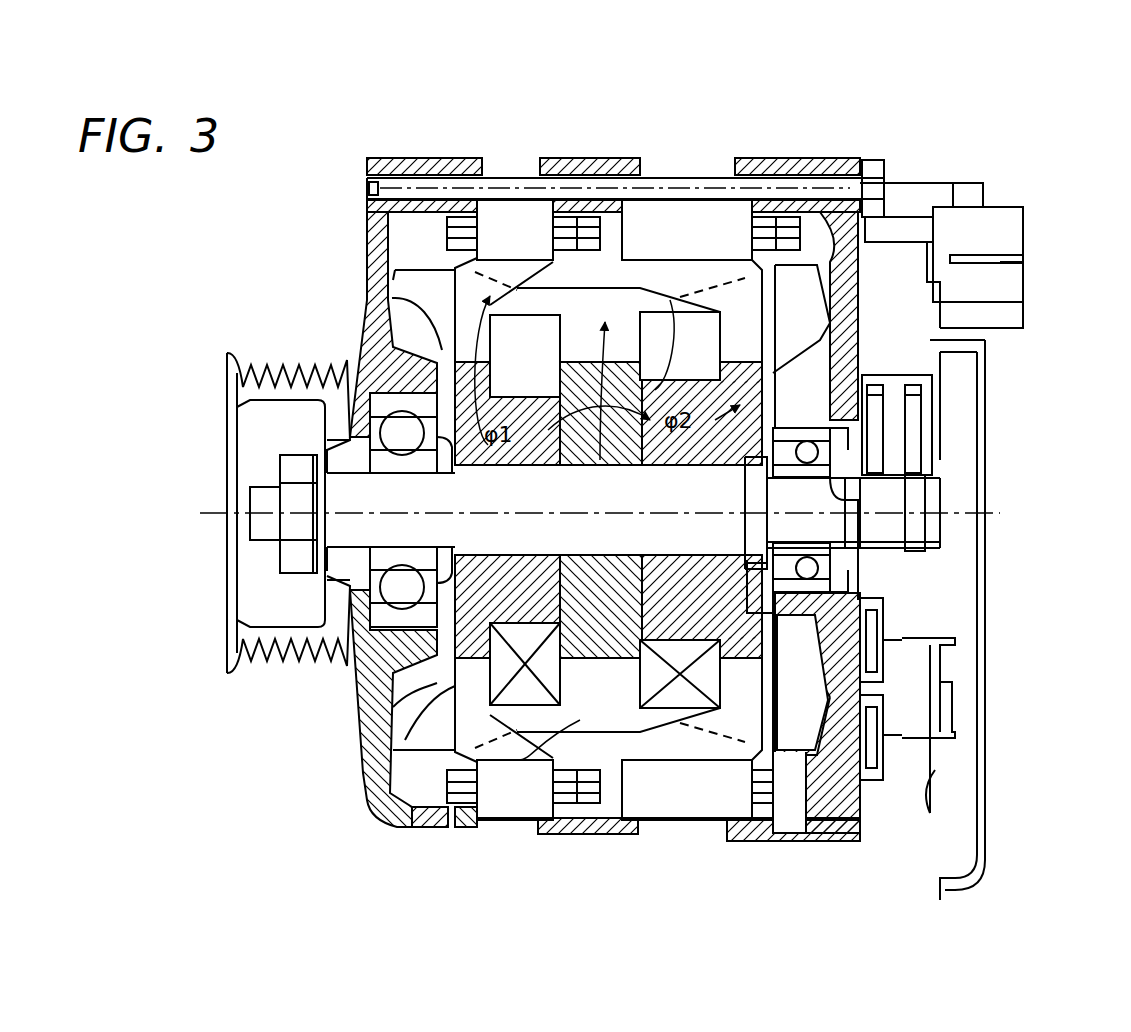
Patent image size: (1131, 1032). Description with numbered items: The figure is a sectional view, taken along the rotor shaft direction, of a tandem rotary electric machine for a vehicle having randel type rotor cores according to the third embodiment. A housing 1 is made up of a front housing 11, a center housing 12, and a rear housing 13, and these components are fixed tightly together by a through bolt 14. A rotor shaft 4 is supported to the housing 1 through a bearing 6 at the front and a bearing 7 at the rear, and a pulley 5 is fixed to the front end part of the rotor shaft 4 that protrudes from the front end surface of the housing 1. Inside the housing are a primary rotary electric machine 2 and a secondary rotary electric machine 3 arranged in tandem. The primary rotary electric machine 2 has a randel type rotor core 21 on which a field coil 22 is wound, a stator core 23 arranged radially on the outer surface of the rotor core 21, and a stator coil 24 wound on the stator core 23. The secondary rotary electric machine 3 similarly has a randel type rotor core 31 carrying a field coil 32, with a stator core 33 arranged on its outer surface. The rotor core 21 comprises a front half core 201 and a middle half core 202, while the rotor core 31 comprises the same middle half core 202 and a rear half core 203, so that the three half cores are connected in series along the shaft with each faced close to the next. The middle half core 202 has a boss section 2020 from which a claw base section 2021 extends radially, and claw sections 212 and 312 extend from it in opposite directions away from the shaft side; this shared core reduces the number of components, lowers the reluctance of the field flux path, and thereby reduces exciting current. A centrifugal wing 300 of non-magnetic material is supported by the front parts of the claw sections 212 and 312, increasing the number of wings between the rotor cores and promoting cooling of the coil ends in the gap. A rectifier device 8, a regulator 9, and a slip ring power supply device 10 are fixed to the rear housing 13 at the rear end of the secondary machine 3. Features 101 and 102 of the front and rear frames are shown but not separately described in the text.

The housing 1 is at (412, 158).
The primary rotary electric machine 2 is at (530, 196).
The secondary rotary electric machine 3 is at (680, 196).
The rotor shaft 4 is at (532, 530).
The pulley 5 is at (268, 660).
The bearing 6 is at (388, 622).
The bearing 7 is at (865, 470).
The rectifier device 8 is at (902, 697).
The regulator 9 is at (906, 240).
The slip ring power supply device 10 is at (938, 440).
The front housing 11 is at (380, 236).
The center housing 12 is at (608, 170).
The rear housing 13 is at (788, 157).
The through bolt 14 is at (518, 200).
The randel type rotor core 21 is at (478, 560).
The field coil 22 is at (478, 690).
The stator core 23 is at (506, 238).
The stator coil 24 is at (572, 240).
The randel type rotor core 31 is at (692, 560).
The field coil 32 is at (735, 702).
The stator core 33 is at (698, 207).
The front frame inner wall 101 is at (420, 290).
The rear frame wall 102 is at (840, 290).
The front half core 201 is at (510, 540).
The middle half core 202 is at (592, 560).
The rear half core 203 is at (700, 558).
The claw section 212 is at (372, 790).
The centrifugal wing 300 is at (608, 268).
The claw section 312 is at (670, 740).
The boss section 2020 is at (625, 565).
The claw base section 2021 is at (598, 712).